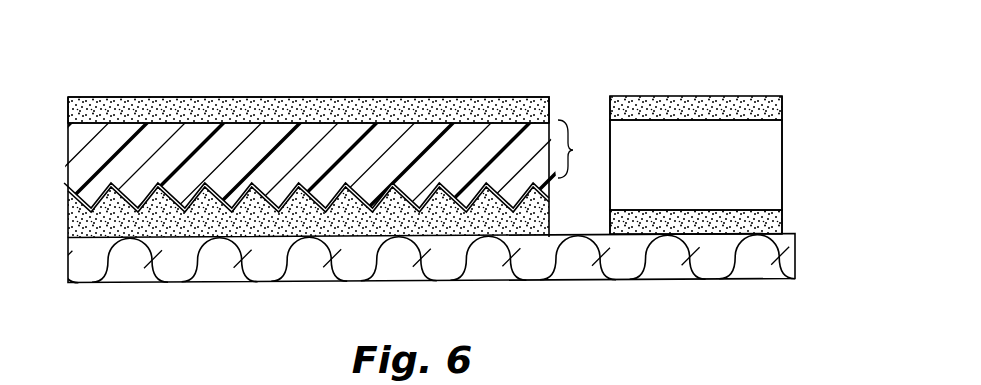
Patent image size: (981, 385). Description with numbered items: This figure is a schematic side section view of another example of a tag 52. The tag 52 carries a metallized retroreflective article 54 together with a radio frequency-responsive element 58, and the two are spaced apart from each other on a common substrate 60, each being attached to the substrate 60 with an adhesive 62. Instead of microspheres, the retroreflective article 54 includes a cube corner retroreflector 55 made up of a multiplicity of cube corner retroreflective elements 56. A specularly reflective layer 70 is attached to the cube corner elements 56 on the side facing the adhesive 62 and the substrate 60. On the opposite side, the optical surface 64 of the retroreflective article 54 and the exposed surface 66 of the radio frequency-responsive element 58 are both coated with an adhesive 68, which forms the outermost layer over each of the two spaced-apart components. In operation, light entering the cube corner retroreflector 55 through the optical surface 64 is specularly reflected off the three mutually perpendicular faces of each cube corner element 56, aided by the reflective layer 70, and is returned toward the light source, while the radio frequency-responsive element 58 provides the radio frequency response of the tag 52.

The tag 52 is at (757, 60).
The metallized retroreflective article 54 is at (62, 123).
The cube corner retroreflector 55 is at (580, 149).
The cube corner retroreflective element 56 is at (192, 198).
The radio frequency-responsive element 58 is at (791, 137).
The substrate 60 is at (300, 272).
The adhesive 62 is at (378, 230).
The optical surface 64 is at (331, 122).
The exposed surface 66 is at (704, 98).
The adhesive 68 is at (502, 102).
The specularly reflective layer 70 is at (552, 195).